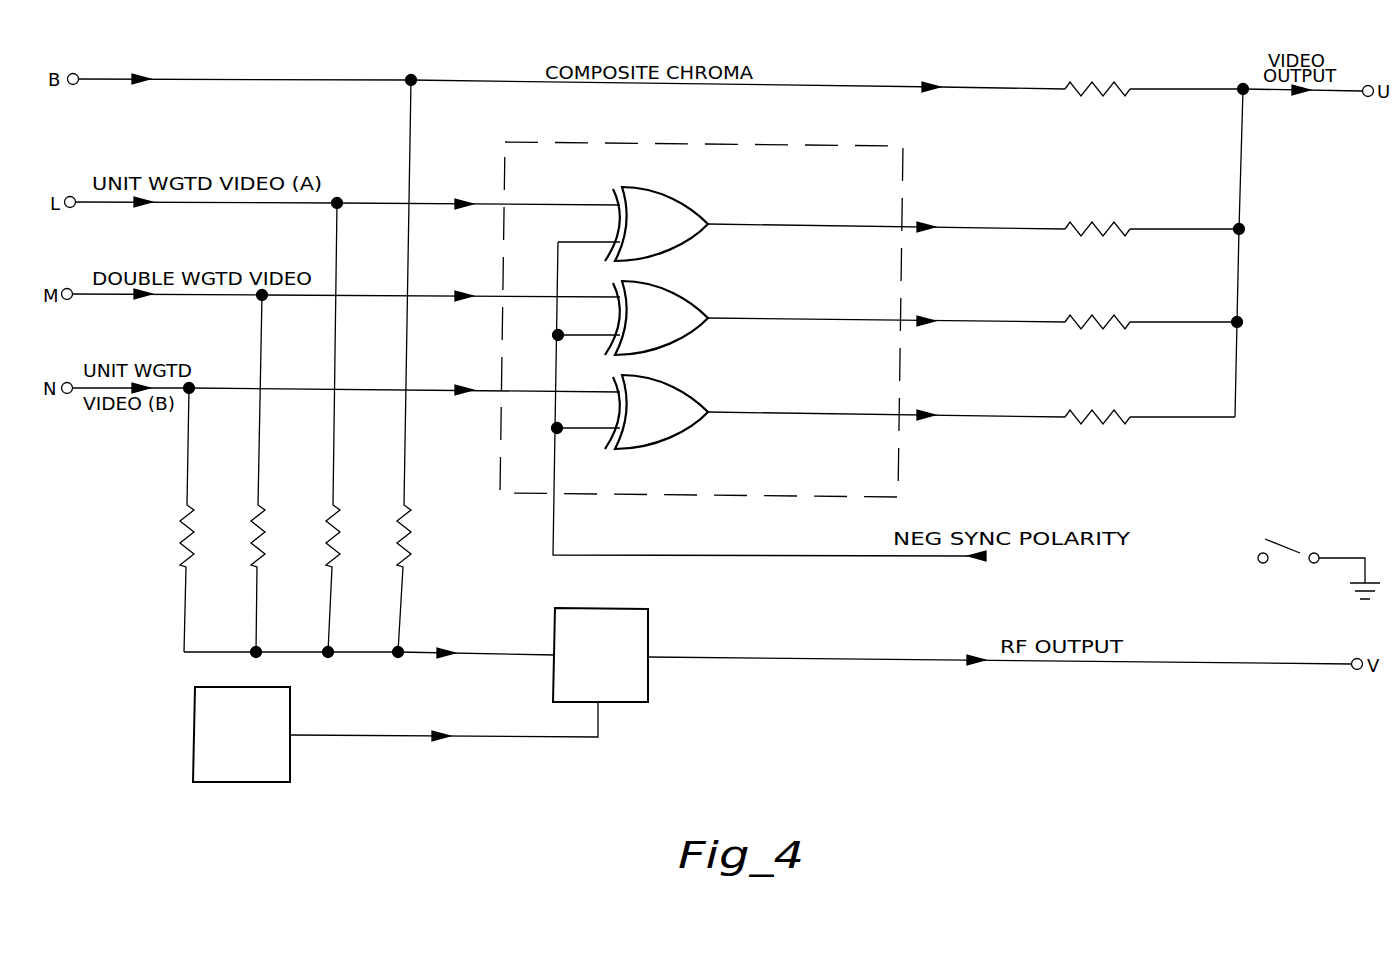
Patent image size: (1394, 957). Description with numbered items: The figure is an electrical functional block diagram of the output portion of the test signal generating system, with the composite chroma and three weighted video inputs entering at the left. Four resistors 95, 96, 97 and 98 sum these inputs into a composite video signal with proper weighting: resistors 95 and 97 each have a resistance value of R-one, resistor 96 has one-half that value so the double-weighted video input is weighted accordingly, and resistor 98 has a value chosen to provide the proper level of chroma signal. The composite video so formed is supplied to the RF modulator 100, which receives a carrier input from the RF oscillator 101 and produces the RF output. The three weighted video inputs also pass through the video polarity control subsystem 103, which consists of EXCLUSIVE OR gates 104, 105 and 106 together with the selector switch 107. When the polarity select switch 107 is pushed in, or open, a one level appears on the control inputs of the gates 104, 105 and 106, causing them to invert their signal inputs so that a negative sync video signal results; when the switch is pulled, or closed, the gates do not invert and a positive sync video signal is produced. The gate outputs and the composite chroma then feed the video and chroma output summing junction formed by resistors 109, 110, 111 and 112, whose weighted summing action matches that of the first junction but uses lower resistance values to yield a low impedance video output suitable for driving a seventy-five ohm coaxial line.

The summing resistor 95 is at (190, 524).
The summing resistor 96 is at (261, 524).
The summing resistor 97 is at (336, 524).
The chroma summing resistor 98 is at (406, 524).
The RF modulator 100 is at (648, 608).
The RF oscillator 101 is at (195, 752).
The video polarity control subsystem 103 is at (898, 484).
The EXCLUSIVE OR gate 104 is at (687, 203).
The EXCLUSIVE OR gate 105 is at (690, 297).
The EXCLUSIVE OR gate 106 is at (693, 392).
The selector switch 107 is at (1298, 560).
The output summing resistor 109 is at (1125, 89).
The output summing resistor 110 is at (1125, 229).
The output summing resistor 111 is at (1125, 322).
The output summing resistor 112 is at (1125, 417).